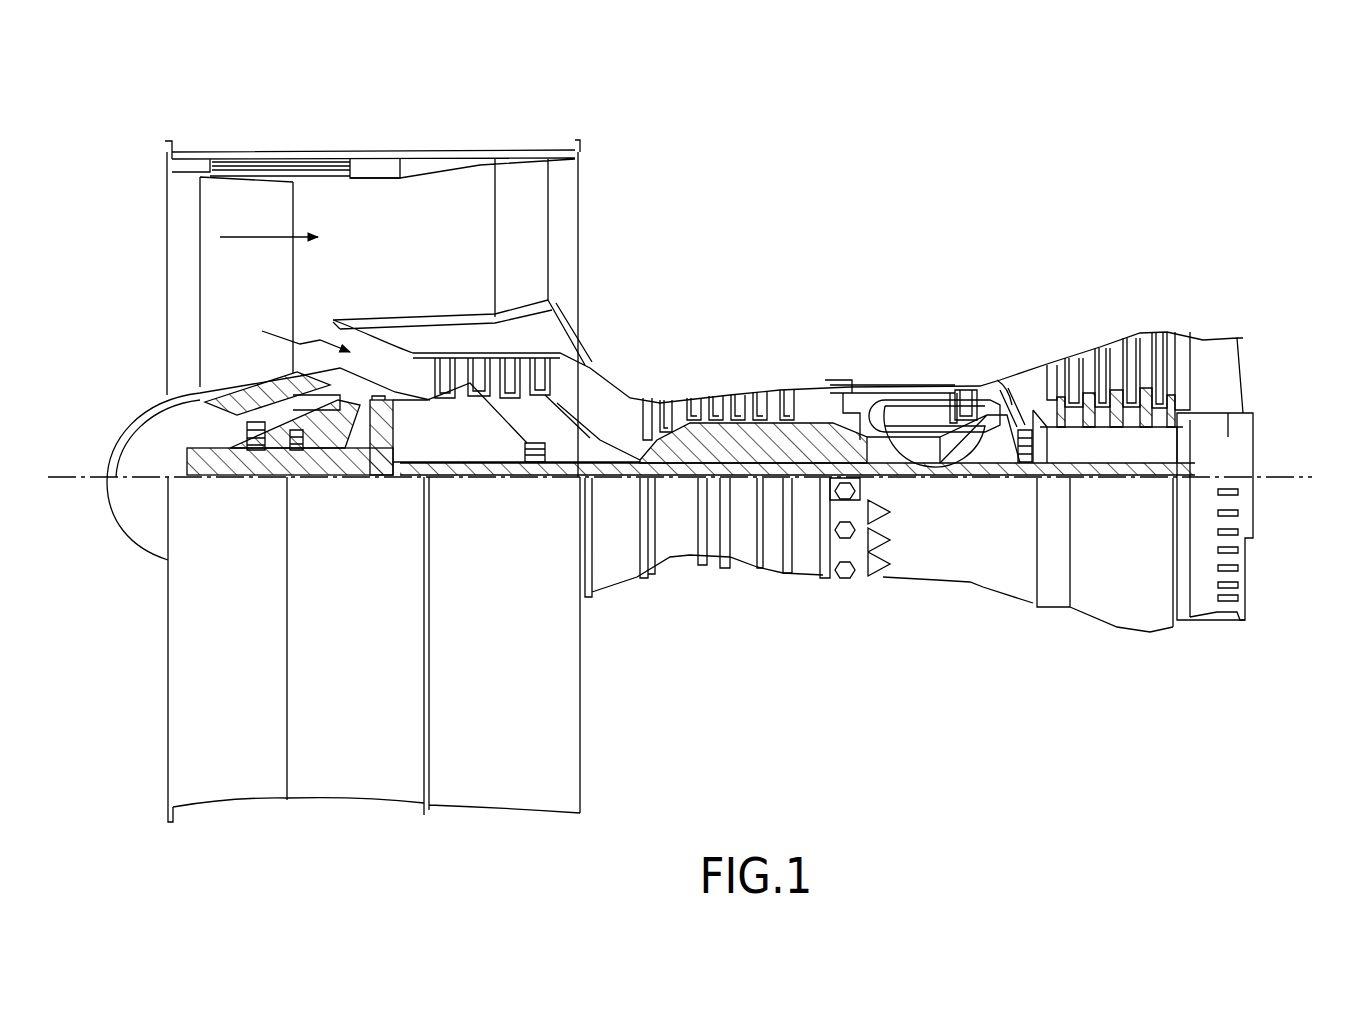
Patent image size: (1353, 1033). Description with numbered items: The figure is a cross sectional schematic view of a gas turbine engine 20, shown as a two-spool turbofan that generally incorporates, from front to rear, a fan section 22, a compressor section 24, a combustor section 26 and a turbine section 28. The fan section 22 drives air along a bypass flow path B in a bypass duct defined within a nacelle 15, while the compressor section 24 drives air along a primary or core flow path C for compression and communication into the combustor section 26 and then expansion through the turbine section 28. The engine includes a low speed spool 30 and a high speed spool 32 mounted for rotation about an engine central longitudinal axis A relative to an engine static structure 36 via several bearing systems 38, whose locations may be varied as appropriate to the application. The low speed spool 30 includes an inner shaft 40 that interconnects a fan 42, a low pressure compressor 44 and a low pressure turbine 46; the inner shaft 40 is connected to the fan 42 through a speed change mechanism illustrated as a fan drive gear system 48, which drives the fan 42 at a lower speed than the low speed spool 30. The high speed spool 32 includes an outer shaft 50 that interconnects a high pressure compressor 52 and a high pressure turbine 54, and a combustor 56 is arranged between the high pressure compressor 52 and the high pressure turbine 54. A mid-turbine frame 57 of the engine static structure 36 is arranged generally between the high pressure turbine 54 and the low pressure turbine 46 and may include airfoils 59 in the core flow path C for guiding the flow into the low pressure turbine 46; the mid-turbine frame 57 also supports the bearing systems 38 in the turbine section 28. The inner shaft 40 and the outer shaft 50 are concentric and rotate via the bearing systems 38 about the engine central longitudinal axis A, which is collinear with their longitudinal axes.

The nacelle 15 is at (372, 165).
The gas turbine engine 20 is at (922, 167).
The fan section 22 is at (287, 137).
The compressor section 24 is at (627, 362).
The combustor section 26 is at (887, 350).
The turbine section 28 is at (1057, 313).
The low speed spool 30 is at (763, 480).
The high speed spool 32 is at (820, 427).
The engine static structure 36 is at (810, 553).
The bearing systems 38 is at (537, 466).
The inner shaft 40 is at (605, 480).
The fan 42 is at (230, 280).
The low pressure compressor 44 is at (508, 367).
The low pressure turbine 46 is at (1110, 355).
The fan drive gear system 48 is at (383, 467).
The outer shaft 50 is at (880, 455).
The high pressure compressor 52 is at (763, 398).
The high pressure turbine 54 is at (957, 390).
The combustor 56 is at (903, 417).
The mid-turbine frame 57 is at (1018, 368).
The airfoils 59 is at (1013, 403).
The engine central longitudinal axis A is at (1305, 470).
The bypass flow path B is at (258, 237).
The core flow path C is at (294, 333).